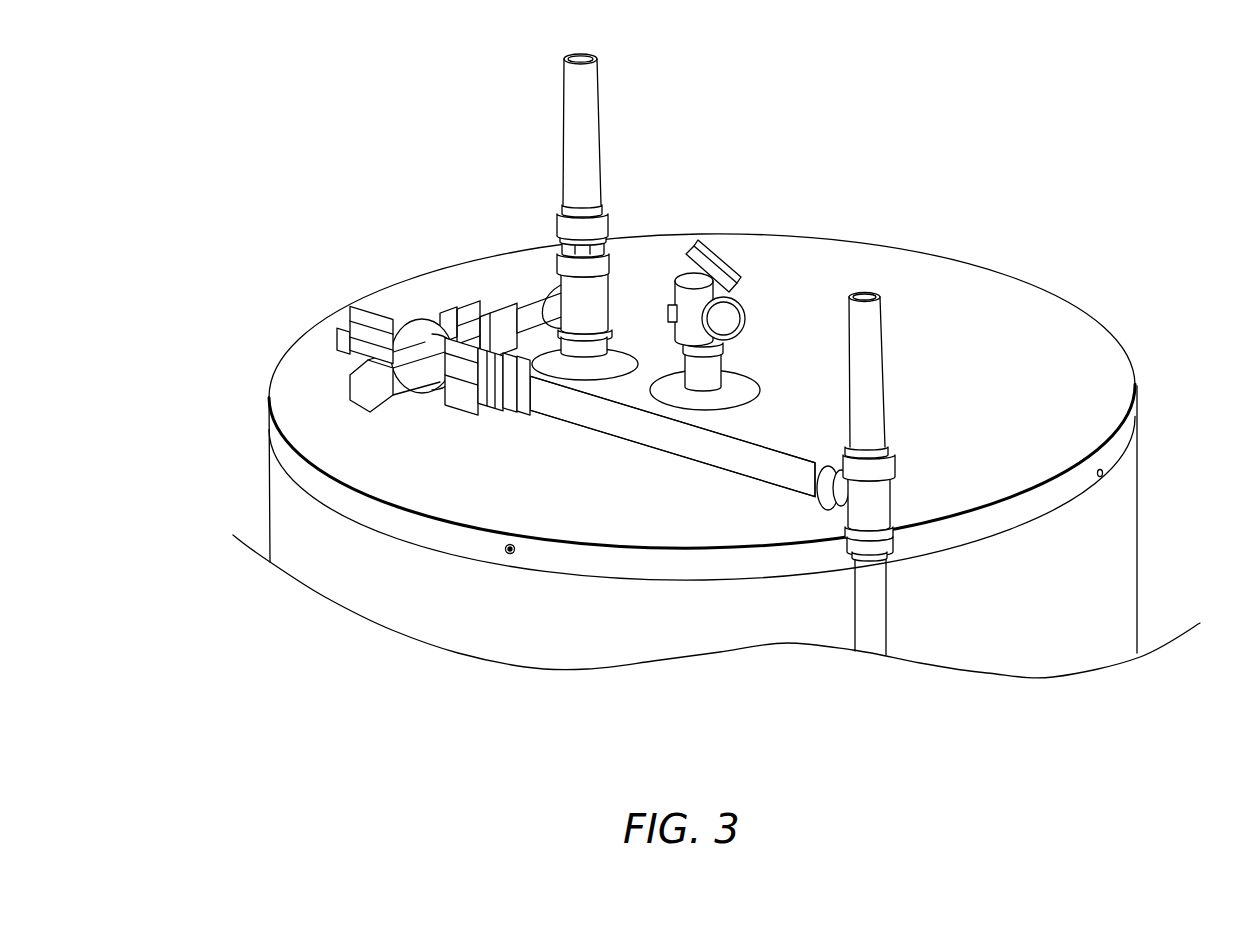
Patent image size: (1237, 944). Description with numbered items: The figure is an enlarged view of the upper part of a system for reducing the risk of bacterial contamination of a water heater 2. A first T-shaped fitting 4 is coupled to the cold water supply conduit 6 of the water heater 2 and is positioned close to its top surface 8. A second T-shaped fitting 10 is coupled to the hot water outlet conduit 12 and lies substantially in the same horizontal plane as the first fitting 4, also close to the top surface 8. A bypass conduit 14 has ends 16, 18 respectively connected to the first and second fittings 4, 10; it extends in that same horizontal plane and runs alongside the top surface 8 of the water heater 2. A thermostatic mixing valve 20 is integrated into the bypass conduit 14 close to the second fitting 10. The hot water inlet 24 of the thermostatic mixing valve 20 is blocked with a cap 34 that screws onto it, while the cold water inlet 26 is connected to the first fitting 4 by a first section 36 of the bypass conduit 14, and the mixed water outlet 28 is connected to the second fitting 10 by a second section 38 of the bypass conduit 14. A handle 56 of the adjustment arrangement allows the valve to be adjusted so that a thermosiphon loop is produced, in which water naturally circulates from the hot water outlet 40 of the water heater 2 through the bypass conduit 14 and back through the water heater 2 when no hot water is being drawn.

The water heater 2 is at (1115, 558).
The top surface 8 is at (1045, 310).
The hot water outlet conduit 12 is at (590, 123).
The second T-shaped fitting 10 is at (603, 280).
The hot water outlet 40 is at (613, 343).
The end of bypass conduit 18 is at (552, 284).
The second section of bypass conduit 38 is at (523, 308).
The cap 34 is at (340, 334).
The hot water inlet 24 is at (410, 320).
The handle 56 is at (375, 388).
The mixed water outlet 28 is at (463, 326).
The cold water inlet 26 is at (430, 405).
The thermostatic mixing valve 20 is at (363, 354).
The bypass conduit 14 is at (700, 477).
The first section of bypass conduit 36 is at (627, 432).
The cold water supply conduit 6 is at (877, 317).
The first T-shaped fitting 4 is at (883, 510).
The end of bypass conduit 16 is at (813, 492).